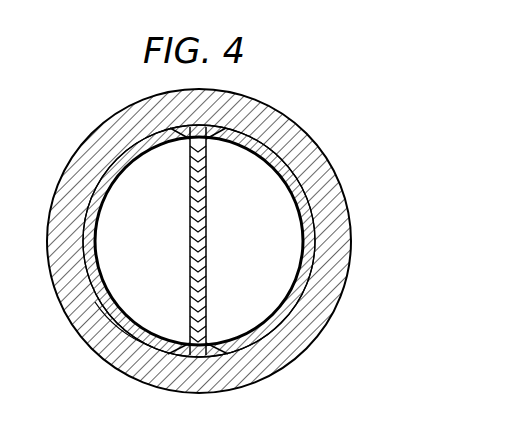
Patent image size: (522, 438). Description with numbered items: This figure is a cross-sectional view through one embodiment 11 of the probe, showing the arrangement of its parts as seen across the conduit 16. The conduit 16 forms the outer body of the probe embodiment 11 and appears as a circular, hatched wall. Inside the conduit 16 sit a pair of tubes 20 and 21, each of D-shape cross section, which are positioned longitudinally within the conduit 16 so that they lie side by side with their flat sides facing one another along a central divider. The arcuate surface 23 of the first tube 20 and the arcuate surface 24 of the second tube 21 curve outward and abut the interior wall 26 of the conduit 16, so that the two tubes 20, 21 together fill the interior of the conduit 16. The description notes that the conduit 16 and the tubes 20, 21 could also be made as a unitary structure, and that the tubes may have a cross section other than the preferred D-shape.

The embodiment of the probe 11 is at (342, 316).
The conduit 16 is at (293, 125).
The tube 20 is at (122, 232).
The tube 21 is at (280, 231).
The arcuate surface 23 is at (108, 167).
The arcuate surface 24 is at (291, 177).
The interior wall 26 is at (112, 321).